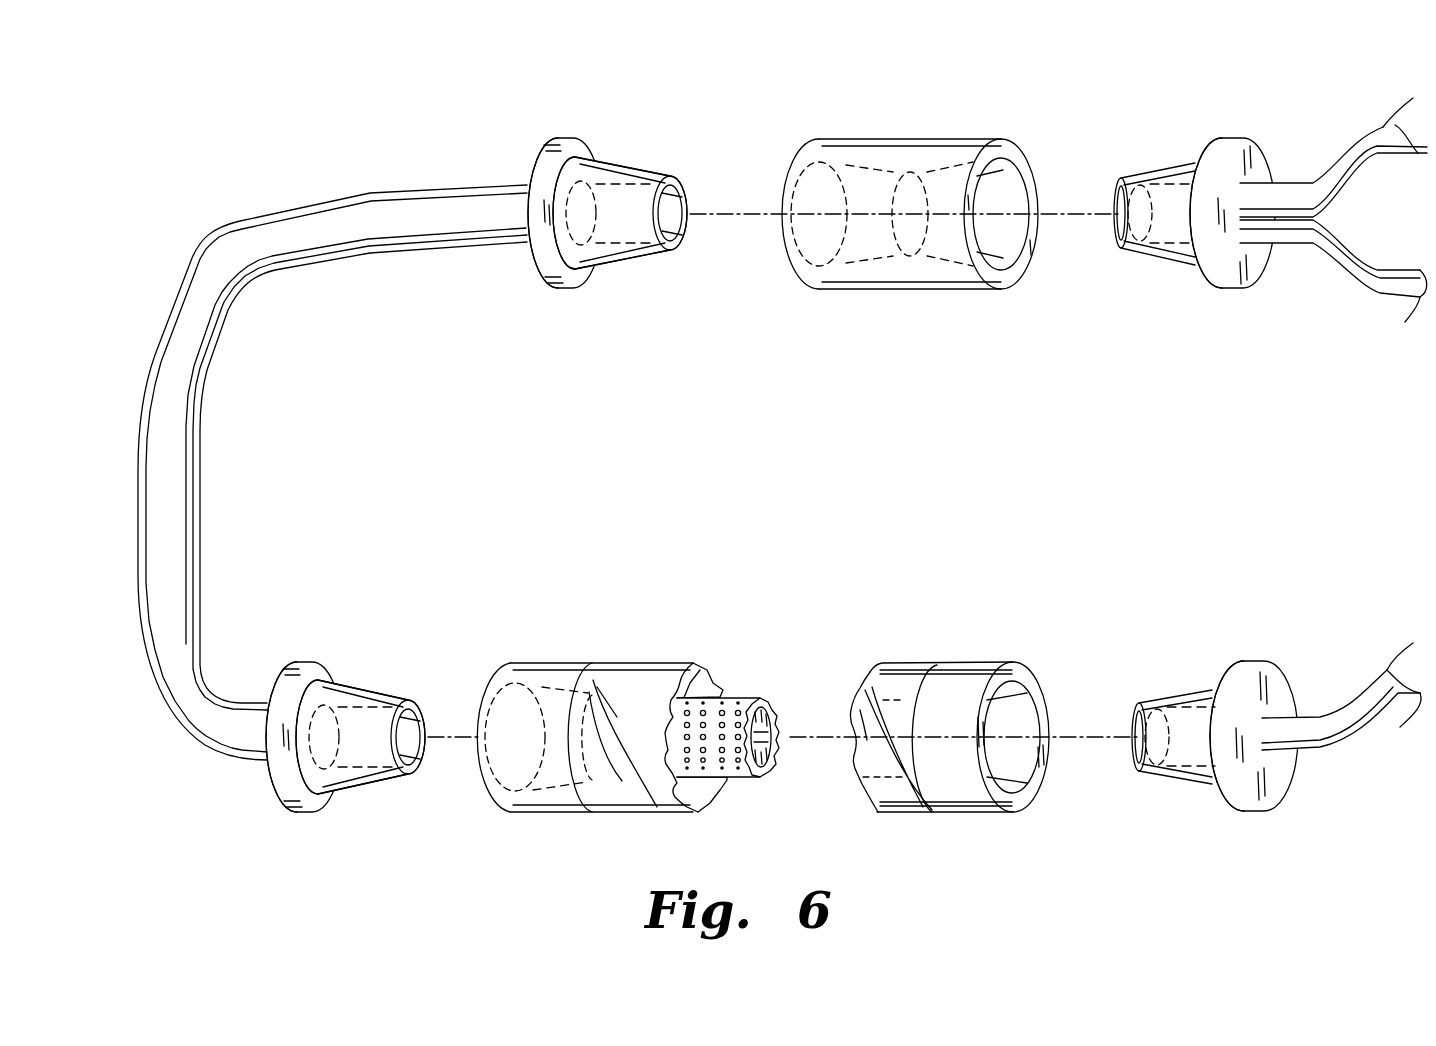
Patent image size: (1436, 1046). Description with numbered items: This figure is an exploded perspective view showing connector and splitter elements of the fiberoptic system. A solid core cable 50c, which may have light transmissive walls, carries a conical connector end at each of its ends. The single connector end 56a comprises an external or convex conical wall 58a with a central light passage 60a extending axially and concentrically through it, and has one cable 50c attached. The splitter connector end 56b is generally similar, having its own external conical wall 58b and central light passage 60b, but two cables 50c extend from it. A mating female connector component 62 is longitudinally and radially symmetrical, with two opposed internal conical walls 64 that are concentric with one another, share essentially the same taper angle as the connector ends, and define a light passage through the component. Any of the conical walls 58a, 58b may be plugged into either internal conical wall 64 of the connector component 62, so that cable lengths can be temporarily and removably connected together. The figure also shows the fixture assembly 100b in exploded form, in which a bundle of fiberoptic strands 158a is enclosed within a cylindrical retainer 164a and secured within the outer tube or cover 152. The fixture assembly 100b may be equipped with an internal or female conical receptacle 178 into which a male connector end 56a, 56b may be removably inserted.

The solid core cable 50c is at (202, 465).
The connector end 56a is at (562, 140).
The external conical wall 58a is at (636, 167).
The central light passage 60a is at (676, 226).
The splitter connector end 56b is at (1240, 136).
The external conical wall 58b is at (1161, 168).
The central light passage 60b is at (1113, 235).
The connector component 62 is at (907, 293).
The internal conical wall 64 is at (783, 172).
The fixture assembly 100b is at (920, 588).
The outer tube or cover 152 is at (870, 667).
The fiberoptic strand bundle 158a is at (780, 760).
The cylindrical fiberoptic bundle retainer 164a is at (738, 782).
The internal conical receptacle 178 is at (542, 663).